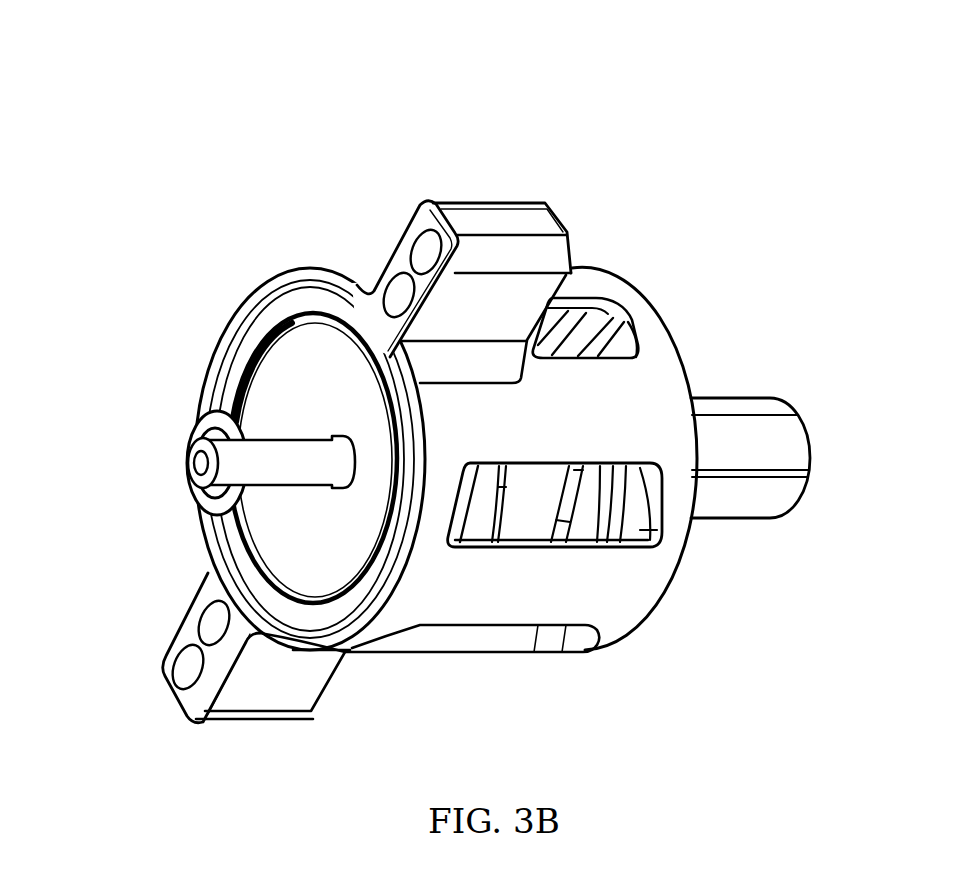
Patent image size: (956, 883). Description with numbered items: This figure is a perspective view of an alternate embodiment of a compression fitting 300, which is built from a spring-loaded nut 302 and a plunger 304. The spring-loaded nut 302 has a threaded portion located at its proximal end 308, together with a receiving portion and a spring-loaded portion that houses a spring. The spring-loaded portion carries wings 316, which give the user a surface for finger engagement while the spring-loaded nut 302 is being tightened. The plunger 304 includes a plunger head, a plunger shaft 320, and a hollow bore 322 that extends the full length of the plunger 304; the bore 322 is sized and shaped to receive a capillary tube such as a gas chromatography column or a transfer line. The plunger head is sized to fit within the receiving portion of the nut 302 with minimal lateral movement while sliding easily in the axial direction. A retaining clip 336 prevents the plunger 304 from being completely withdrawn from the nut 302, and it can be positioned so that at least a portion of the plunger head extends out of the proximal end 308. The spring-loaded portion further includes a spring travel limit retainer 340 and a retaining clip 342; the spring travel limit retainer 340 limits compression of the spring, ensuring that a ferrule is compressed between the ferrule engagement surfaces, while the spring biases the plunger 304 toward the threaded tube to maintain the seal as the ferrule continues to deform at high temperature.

The compression fitting 300 is at (474, 372).
The spring-loaded nut 302 is at (637, 637).
The plunger 304 is at (214, 549).
The proximal end 308 is at (808, 479).
The wings 316 is at (418, 223).
The plunger shaft 320 is at (221, 360).
The hollow bore 322 is at (200, 463).
The retaining clip 336 is at (197, 421).
The spring travel limit retainer 340 is at (587, 503).
The retaining clip 342 is at (345, 540).